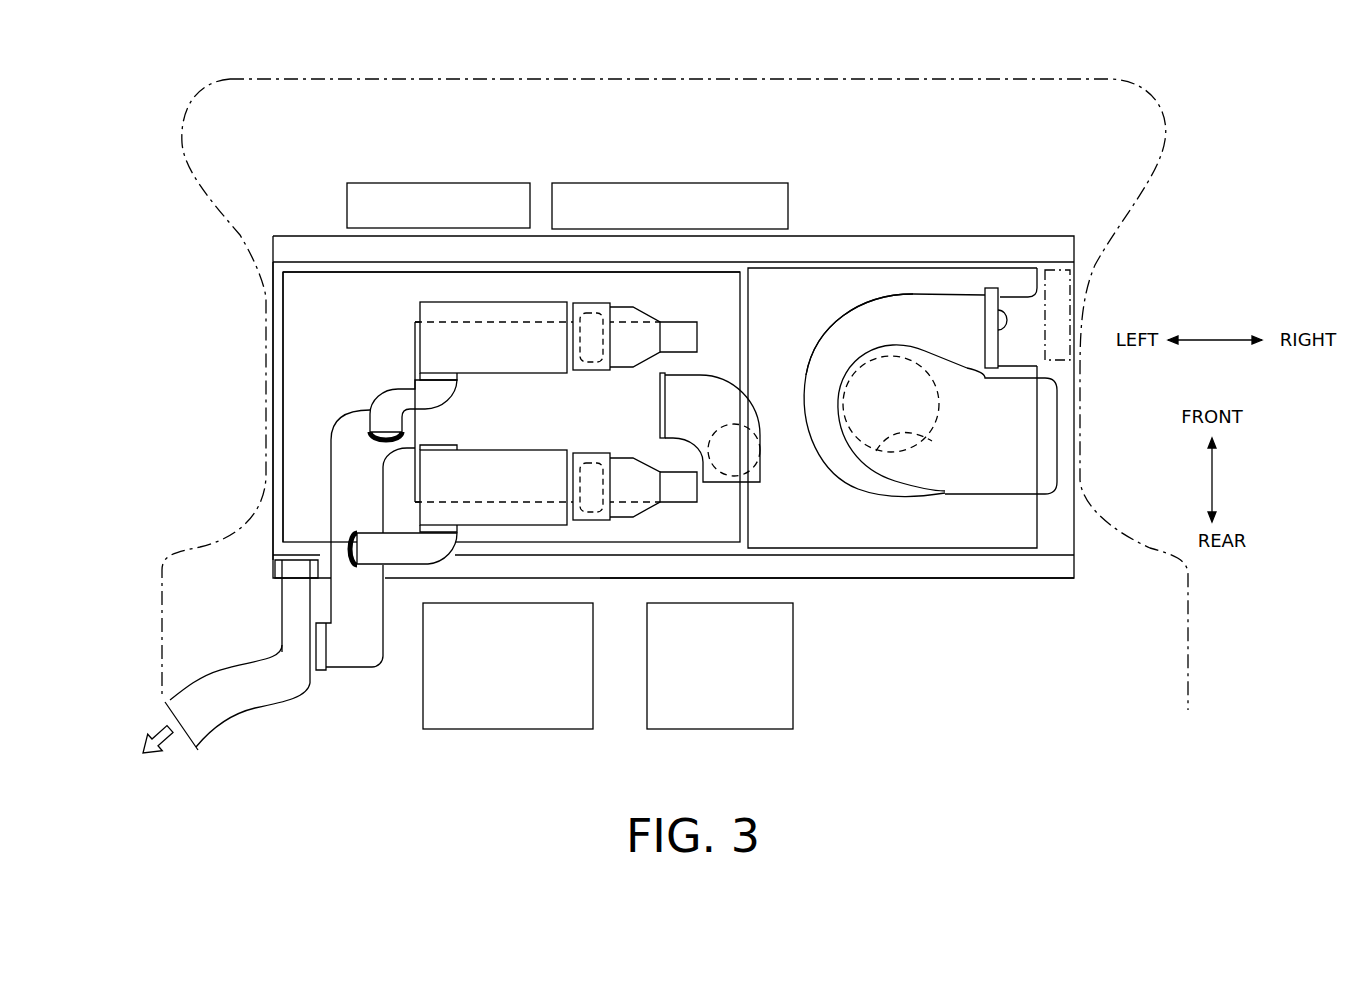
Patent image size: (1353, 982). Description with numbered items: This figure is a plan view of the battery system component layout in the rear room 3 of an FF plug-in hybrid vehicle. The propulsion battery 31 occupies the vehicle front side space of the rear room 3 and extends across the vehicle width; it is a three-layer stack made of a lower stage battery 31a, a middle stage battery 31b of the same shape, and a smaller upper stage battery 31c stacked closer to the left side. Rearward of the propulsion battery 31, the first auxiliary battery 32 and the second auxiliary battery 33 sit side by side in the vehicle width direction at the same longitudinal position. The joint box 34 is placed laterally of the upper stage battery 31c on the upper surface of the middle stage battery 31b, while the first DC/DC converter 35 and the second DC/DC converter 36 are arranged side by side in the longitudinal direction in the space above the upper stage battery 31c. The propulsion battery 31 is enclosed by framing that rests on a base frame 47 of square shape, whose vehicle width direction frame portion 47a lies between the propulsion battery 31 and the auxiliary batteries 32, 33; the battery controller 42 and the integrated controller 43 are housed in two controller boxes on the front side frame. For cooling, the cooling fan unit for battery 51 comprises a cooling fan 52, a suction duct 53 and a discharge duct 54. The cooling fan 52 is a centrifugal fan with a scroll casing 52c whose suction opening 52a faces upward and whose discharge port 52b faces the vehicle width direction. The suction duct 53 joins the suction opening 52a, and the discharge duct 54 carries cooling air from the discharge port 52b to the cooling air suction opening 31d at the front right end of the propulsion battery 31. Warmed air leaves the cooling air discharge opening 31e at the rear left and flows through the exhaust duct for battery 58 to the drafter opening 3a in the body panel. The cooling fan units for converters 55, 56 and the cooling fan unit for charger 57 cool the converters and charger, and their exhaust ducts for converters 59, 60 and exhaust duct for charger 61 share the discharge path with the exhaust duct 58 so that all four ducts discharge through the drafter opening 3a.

The rear room 3 is at (943, 155).
The drafter opening 3a is at (178, 690).
The propulsion battery 31 is at (160, 323).
The lower stage battery 31a is at (280, 393).
The middle stage battery 31b is at (245, 407).
The upper stage battery 31c is at (302, 340).
The cooling air suction opening 31d is at (1072, 298).
The cooling air discharge opening 31e is at (303, 558).
The first auxiliary battery 32 is at (727, 705).
The second auxiliary battery 33 is at (531, 705).
The joint box 34 is at (807, 287).
The first DC/DC converter 35 is at (482, 472).
The second DC/DC converter 36 is at (500, 340).
The battery controller 42 is at (460, 208).
The integrated controller 43 is at (686, 208).
The base frame 47 is at (958, 237).
The vehicle width direction frame portion 47a is at (978, 568).
The cooling fan unit for battery 51 is at (873, 512).
The cooling fan 52 is at (848, 486).
The suction opening 52a is at (938, 442).
The discharge port 52b is at (985, 334).
The scroll casing 52c is at (877, 330).
The suction duct 53 is at (1005, 497).
The discharge duct 54 is at (1009, 297).
The cooling fan unit for converters 55 is at (650, 511).
The cooling fan unit for converters 56 is at (650, 312).
The cooling fan unit for charger 57 is at (706, 374).
The exhaust duct for battery 58 is at (265, 683).
The exhaust duct for converters 59 is at (402, 553).
The exhaust duct for converters 60 is at (403, 400).
The exhaust duct for charger 61 is at (345, 452).